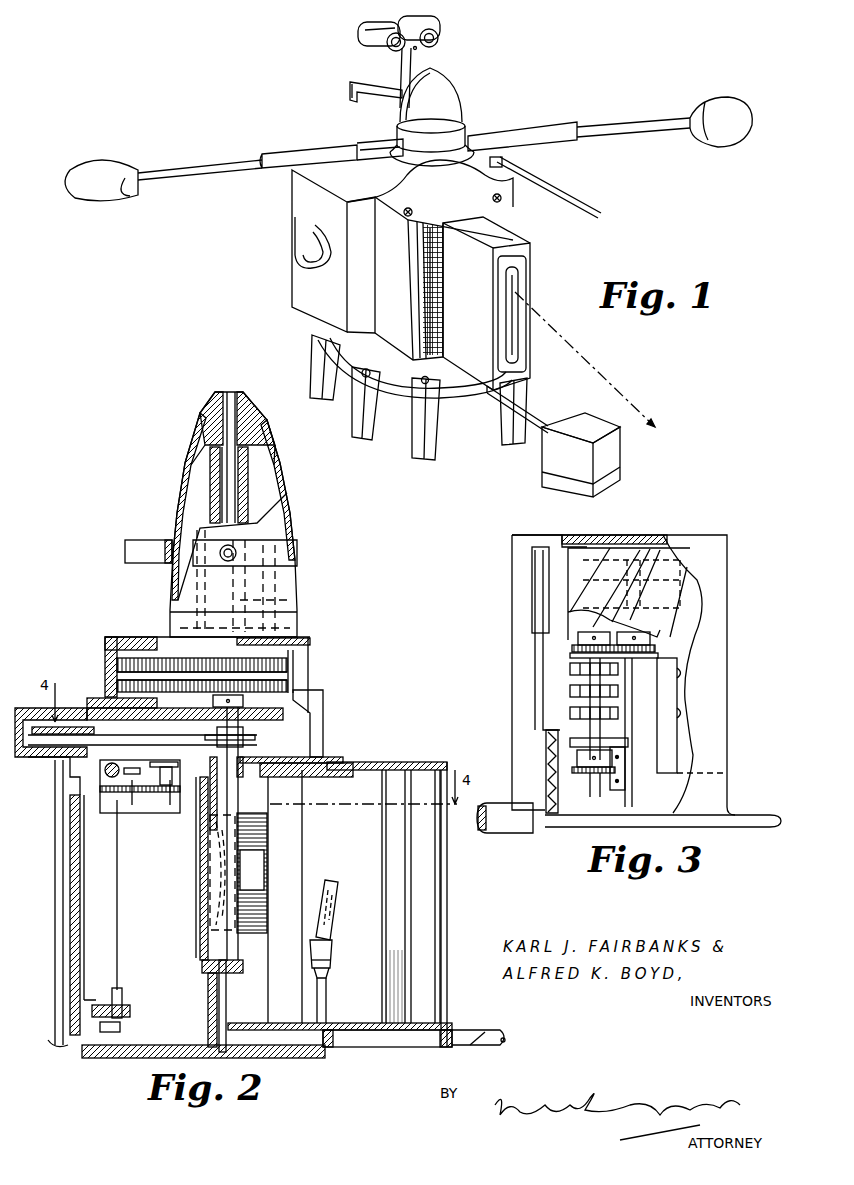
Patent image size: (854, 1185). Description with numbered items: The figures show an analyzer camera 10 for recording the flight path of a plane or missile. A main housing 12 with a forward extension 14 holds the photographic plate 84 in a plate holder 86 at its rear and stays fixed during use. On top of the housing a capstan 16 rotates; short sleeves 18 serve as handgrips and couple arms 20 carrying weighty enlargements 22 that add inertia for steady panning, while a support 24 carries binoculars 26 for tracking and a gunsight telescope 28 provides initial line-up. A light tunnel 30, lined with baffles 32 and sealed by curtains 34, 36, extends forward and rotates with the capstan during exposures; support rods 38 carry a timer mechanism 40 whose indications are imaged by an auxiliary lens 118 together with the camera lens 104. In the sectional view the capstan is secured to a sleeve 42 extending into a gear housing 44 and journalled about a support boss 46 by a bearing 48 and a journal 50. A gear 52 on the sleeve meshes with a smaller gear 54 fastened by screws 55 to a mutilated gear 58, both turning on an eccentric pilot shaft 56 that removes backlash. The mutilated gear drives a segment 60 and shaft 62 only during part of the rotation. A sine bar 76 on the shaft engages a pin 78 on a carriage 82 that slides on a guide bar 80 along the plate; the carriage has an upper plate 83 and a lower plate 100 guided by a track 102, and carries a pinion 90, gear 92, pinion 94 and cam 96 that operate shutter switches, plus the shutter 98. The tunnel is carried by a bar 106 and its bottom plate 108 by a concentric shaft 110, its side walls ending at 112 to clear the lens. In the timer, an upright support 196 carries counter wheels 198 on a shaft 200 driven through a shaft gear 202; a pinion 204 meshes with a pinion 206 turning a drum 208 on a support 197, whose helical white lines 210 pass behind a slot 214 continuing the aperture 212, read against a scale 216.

In FIG. 1, the analyzer camera 10 is at (264, 248).
In FIG. 1, the main body or housing 12 is at (312, 203).
In FIG. 1, the forward extension 14 is at (395, 260).
In FIG. 1, the capstan 16 is at (458, 108).
In FIG. 2, the capstan 16 is at (282, 471).
In FIG. 1, the sleeves 18 is at (292, 152).
In FIG. 2, the sleeves 18 is at (240, 552).
In FIG. 1, the arms 20 is at (230, 162).
In FIG. 1, the weighty enlargements 22 is at (112, 160).
In FIG. 1, the support 24 is at (380, 95).
In FIG. 2, the support 24 is at (140, 560).
In FIG. 1, the binoculars 26 is at (375, 42).
In FIG. 1, the gunsight telescope 28 is at (560, 208).
In FIG. 1, the light tunnel 30 is at (470, 300).
In FIG. 2, the light tunnel 30 is at (370, 775).
In FIG. 1, the baffles 32 is at (524, 292).
In FIG. 2, the baffles 32 is at (405, 826).
In FIG. 1, the curtain 34 is at (425, 313).
In FIG. 1, the curtain 36 is at (503, 214).
In FIG. 1, the support rods 38 is at (540, 410).
In FIG. 2, the support rods 38 is at (492, 1035).
In FIG. 3, the support rods 38 is at (503, 828).
In FIG. 1, the timer mechanism 40 is at (600, 440).
In FIG. 3, the timer mechanism 40 is at (750, 590).
In FIG. 2, the sleeve 42 is at (218, 490).
In FIG. 2, the gear housing 44 is at (312, 688).
In FIG. 2, the support boss 46 is at (283, 600).
In FIG. 2, the bearing 48 is at (270, 626).
In FIG. 2, the journal 50 is at (250, 452).
In FIG. 2, the gear 52 is at (290, 668).
In FIG. 2, the smaller gear 54 is at (120, 660).
In FIG. 2, the screws 55 is at (117, 675).
In FIG. 2, the pilot shaft 56 is at (135, 640).
In FIG. 2, the mutilated gear 58 is at (117, 686).
In FIG. 2, the segment 60 is at (316, 706).
In FIG. 2, the shaft 62 is at (230, 455).
In FIG. 2, the sine bar 76 is at (165, 745).
In FIG. 2, the pin 78 is at (92, 740).
In FIG. 2, the guide bar 80 is at (108, 766).
In FIG. 2, the carriage 82 is at (144, 795).
In FIG. 2, the upper plate 83 is at (172, 766).
In FIG. 2, the photographic plate 84 is at (80, 846).
In FIG. 2, the plate or film holder 86 is at (60, 910).
In FIG. 2, the pinion 90 is at (137, 773).
In FIG. 2, the gear 92 is at (125, 792).
In FIG. 2, the pinion 94 is at (170, 794).
In FIG. 2, the cam 96 is at (174, 778).
In FIG. 2, the shutter 98 is at (100, 900).
In FIG. 2, the lower plate 100 is at (130, 1012).
In FIG. 2, the track 102 is at (120, 1028).
In FIG. 2, the photographic lens 104 is at (258, 852).
In FIG. 2, the bar 106 is at (318, 776).
In FIG. 2, the bottom plate 108 is at (358, 1025).
In FIG. 2, the shaft 110 is at (228, 1000).
In FIG. 2, the side wall termination 112 is at (312, 955).
In FIG. 2, the auxiliary lens 118 is at (334, 913).
In FIG. 3, the upright support 196 is at (670, 736).
In FIG. 3, the support 197 is at (650, 592).
In FIG. 3, the counter wheels 198 is at (568, 705).
In FIG. 3, the shaft 200 is at (592, 786).
In FIG. 3, the shaft gear 202 is at (625, 770).
In FIG. 3, the pinion 204 is at (576, 664).
In FIG. 3, the pinion 206 is at (657, 652).
In FIG. 3, the drum 208 is at (690, 590).
In FIG. 3, the helical white lines 210 is at (640, 560).
In FIG. 3, the aperture 212 is at (538, 663).
In FIG. 3, the slot 214 is at (552, 550).
In FIG. 3, the scale 216 is at (530, 578).